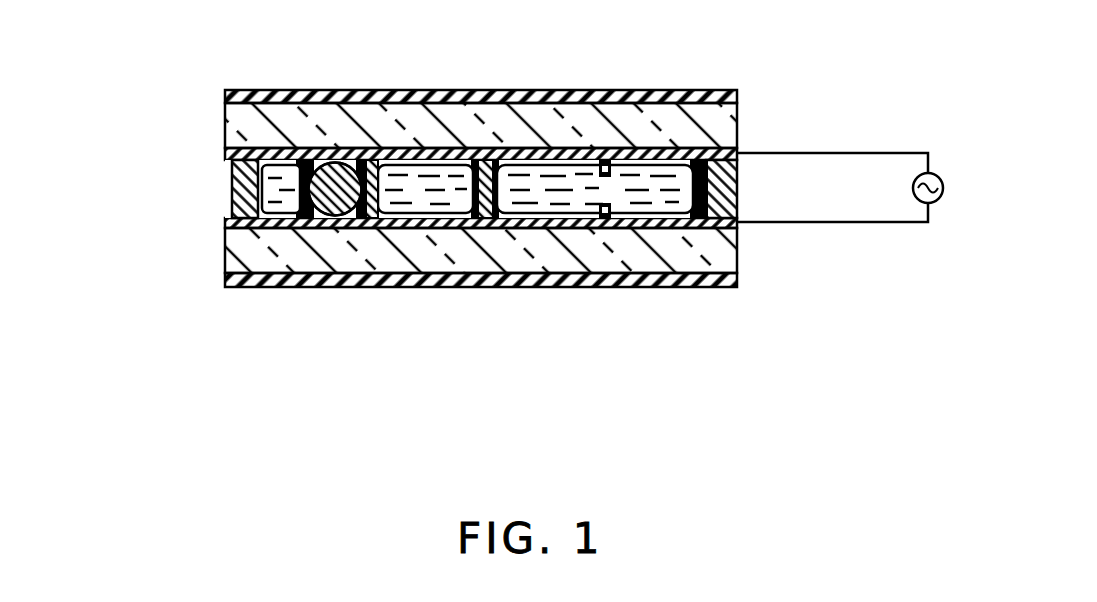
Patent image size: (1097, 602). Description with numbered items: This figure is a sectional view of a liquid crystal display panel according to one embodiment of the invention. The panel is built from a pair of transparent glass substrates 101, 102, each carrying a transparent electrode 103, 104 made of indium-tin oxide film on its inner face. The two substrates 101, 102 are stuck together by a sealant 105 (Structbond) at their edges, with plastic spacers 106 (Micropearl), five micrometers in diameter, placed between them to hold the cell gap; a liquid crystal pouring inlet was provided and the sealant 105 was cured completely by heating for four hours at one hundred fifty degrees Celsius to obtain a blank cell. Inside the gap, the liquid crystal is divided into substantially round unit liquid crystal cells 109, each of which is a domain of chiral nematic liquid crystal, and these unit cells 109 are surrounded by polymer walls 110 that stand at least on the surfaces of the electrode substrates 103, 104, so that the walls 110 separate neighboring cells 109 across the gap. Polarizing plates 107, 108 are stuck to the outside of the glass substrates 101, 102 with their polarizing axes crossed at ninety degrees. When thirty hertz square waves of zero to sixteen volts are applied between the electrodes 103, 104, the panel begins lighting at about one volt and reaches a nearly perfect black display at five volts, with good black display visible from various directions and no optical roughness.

The transparent glass substrate 101 is at (738, 129).
The transparent glass substrate 102 is at (736, 247).
The transparent electrode 103 is at (225, 155).
The transparent electrode 104 is at (227, 220).
The sealant 105 is at (225, 194).
The plastic spacer 106 is at (227, 202).
The polarizing plate 107 is at (738, 92).
The polarizing plate 108 is at (736, 284).
The unit liquid crystal cell 109 is at (418, 193).
The polymer wall 110 is at (365, 148).